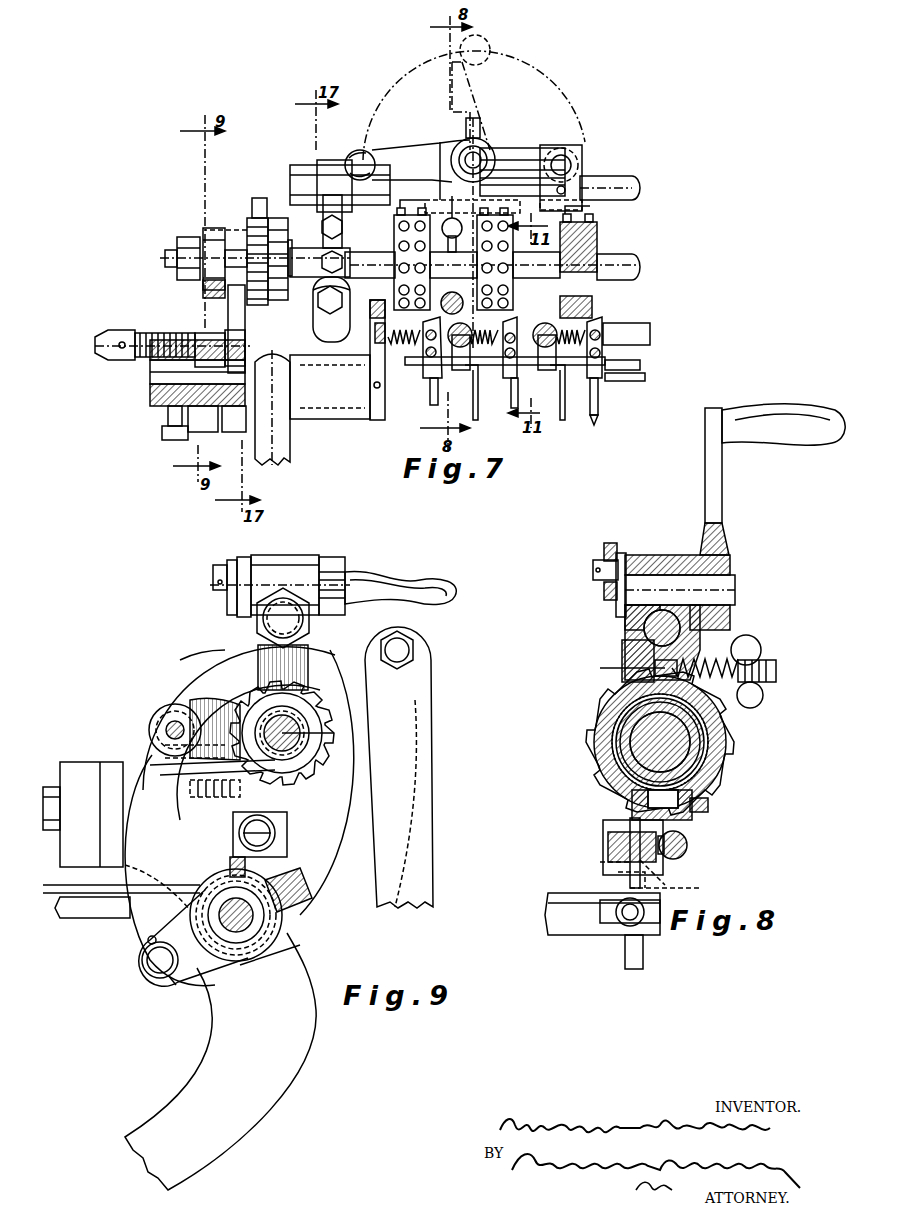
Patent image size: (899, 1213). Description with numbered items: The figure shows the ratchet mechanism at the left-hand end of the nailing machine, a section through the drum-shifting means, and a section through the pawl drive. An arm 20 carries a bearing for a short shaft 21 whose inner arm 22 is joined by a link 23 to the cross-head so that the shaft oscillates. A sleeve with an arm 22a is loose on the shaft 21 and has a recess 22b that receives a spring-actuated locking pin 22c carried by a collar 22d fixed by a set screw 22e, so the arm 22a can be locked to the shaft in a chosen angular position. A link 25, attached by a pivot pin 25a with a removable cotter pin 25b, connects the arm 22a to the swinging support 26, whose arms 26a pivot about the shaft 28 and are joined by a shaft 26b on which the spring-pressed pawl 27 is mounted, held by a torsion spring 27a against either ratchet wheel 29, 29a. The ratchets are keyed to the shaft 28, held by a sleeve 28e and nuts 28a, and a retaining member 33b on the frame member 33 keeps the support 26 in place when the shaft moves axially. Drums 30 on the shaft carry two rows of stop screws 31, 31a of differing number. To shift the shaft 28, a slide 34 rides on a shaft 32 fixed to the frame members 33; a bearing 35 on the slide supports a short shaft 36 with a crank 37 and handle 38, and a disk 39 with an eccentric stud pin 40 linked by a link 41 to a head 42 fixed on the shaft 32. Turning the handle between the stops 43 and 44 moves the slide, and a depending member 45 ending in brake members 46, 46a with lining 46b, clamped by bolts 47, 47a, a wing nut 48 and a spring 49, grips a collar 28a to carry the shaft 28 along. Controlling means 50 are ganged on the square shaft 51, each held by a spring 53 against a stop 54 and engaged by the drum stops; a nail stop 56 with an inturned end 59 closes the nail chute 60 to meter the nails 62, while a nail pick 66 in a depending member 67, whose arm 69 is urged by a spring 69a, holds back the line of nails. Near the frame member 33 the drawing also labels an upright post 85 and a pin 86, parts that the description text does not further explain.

In FIG. 7, the arm 20 is at (292, 445).
In FIG. 9, the arm 20 is at (216, 1050).
In FIG. 7, the short shaft 21 is at (372, 395).
In FIG. 9, the short shaft 21 is at (252, 922).
In FIG. 7, the arm 22 is at (150, 380).
In FIG. 9, the arm 22 is at (325, 900).
In FIG. 7, the arm 22a is at (195, 432).
In FIG. 9, the arm 22a is at (192, 975).
In FIG. 7, the recessed portion 22b is at (198, 336).
In FIG. 9, the recessed portion 22b is at (239, 845).
In FIG. 7, the spring-actuated locking pin 22c is at (140, 336).
In FIG. 9, the spring-actuated locking pin 22c is at (230, 862).
In FIG. 7, the collar 22d is at (150, 396).
In FIG. 9, the collar 22d is at (292, 892).
In FIG. 7, the set screw 22e is at (162, 430).
In FIG. 9, the link 23 is at (422, 808).
In FIG. 7, the link 25 is at (228, 313).
In FIG. 9, the link 25 is at (135, 905).
In FIG. 9, the pivot pin 25a is at (158, 975).
In FIG. 9, the cotter pin 25b is at (142, 945).
In FIG. 9, the swinging support 26 is at (150, 702).
In FIG. 7, the arms 26a is at (203, 288).
In FIG. 9, the arms 26a is at (190, 660).
In FIG. 9, the shaft 26b is at (149, 730).
In FIG. 7, the spring-pressed pawl 27 is at (256, 193).
In FIG. 9, the spring-pressed pawl 27 is at (232, 662).
In FIG. 7, the torsion spring 27a is at (247, 220).
In FIG. 9, the torsion spring 27a is at (200, 672).
In FIG. 7, the axially movable shaft 28 is at (165, 254).
In FIG. 8, the axially movable shaft 28 is at (640, 745).
In FIG. 9, the axially movable shaft 28 is at (292, 745).
In FIG. 7, the collar 28a is at (190, 237).
In FIG. 8, the collar 28a is at (700, 790).
In FIG. 7, the sleeve 28e is at (218, 240).
In FIG. 7, the ratchet wheel 29 is at (258, 305).
In FIG. 9, the ratchet wheel 29 is at (318, 700).
In FIG. 7, the ratchet wheel 29a is at (280, 302).
In FIG. 9, the ratchet wheel 29a is at (328, 720).
In FIG. 7, the drum 30 is at (394, 238).
In FIG. 8, the drum 30 is at (600, 765).
In FIG. 7, the stops 31 is at (397, 212).
In FIG. 7, the stops 31a is at (612, 224).
In FIG. 7, the shaft 32 is at (628, 182).
In FIG. 8, the shaft 32 is at (640, 630).
In FIG. 9, the shaft 32 is at (300, 630).
In FIG. 7, the frame members 33 is at (325, 165).
In FIG. 7, the retaining member 33b is at (349, 287).
In FIG. 7, the slide member 34 is at (522, 160).
In FIG. 8, the slide member 34 is at (622, 658).
In FIG. 7, the transverse bearing 35 is at (455, 150).
In FIG. 8, the transverse bearing 35 is at (655, 556).
In FIG. 9, the transverse bearing 35 is at (286, 555).
In FIG. 7, the short shaft 36 is at (493, 150).
In FIG. 8, the short shaft 36 is at (735, 590).
In FIG. 7, the crank 37 is at (478, 95).
In FIG. 8, the crank 37 is at (722, 490).
In FIG. 9, the crank 37 is at (333, 557).
In FIG. 7, the operating handle 38 is at (480, 55).
In FIG. 8, the operating handle 38 is at (778, 415).
In FIG. 9, the operating handle 38 is at (403, 575).
In FIG. 8, the disk 39 is at (622, 553).
In FIG. 9, the disk 39 is at (244, 557).
In FIG. 7, the stud pin 40 is at (480, 135).
In FIG. 8, the stud pin 40 is at (593, 570).
In FIG. 9, the stud pin 40 is at (213, 575).
In FIG. 7, the link 41 is at (518, 150).
In FIG. 8, the link 41 is at (604, 592).
In FIG. 9, the link 41 is at (230, 560).
In FIG. 7, the head 42 is at (578, 150).
In FIG. 7, the stop 43 is at (435, 200).
In FIG. 7, the stop 44 is at (524, 170).
In FIG. 8, the depending member 45 is at (613, 671).
In FIG. 8, the brake member 46 is at (615, 694).
In FIG. 8, the brake member 46a is at (716, 730).
In FIG. 8, the lining 46b is at (616, 722).
In FIG. 8, the bolt 47 is at (690, 815).
In FIG. 8, the bolt 47a is at (775, 668).
In FIG. 8, the wing nut 48 is at (758, 652).
In FIG. 8, the spring 49 is at (705, 663).
In FIG. 7, the controlling means 50 is at (420, 355).
In FIG. 8, the controlling means 50 is at (615, 845).
In FIG. 7, the square shaft 51 is at (634, 319).
In FIG. 8, the square shaft 51 is at (630, 836).
In FIG. 9, the square shaft 51 is at (240, 818).
In FIG. 7, the spring 53 is at (397, 324).
In FIG. 8, the spring 53 is at (688, 845).
In FIG. 7, the stop 54 is at (520, 322).
In FIG. 7, the nail stop 56 is at (623, 365).
In FIG. 8, the inturned lower end 59 is at (673, 888).
In FIG. 7, the nail chute 60 is at (612, 381).
In FIG. 8, the nail chute 60 is at (568, 895).
In FIG. 9, the nail chute 60 is at (68, 918).
In FIG. 7, the nails 62 is at (600, 418).
In FIG. 7, the nail pick 66 is at (434, 405).
In FIG. 8, the nail pick 66 is at (622, 925).
In FIG. 8, the depending member 67 is at (660, 885).
In FIG. 7, the arm 69 is at (493, 380).
In FIG. 8, the spring 69a is at (605, 868).
In FIG. 7, the post 85 is at (318, 216).
In FIG. 7, the pin 86 is at (342, 227).